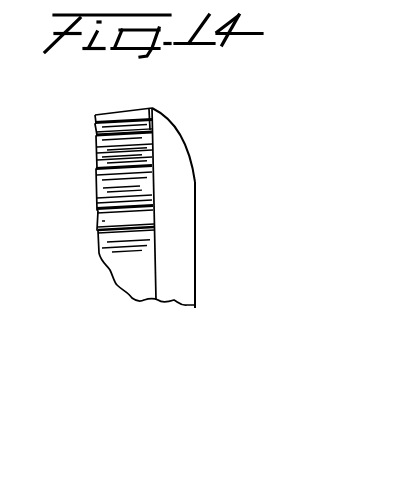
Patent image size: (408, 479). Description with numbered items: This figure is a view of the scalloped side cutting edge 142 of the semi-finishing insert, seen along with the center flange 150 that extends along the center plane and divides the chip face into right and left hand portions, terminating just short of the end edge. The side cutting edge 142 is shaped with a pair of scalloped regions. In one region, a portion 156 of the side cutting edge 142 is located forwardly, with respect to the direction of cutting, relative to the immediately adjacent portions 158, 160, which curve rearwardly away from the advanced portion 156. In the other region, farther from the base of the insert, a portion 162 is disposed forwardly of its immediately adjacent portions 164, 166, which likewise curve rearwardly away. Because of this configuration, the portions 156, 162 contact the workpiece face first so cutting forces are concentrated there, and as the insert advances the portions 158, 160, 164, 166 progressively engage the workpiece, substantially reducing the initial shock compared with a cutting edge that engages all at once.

The side cutting edge 142 is at (152, 196).
The center flange 150 is at (177, 278).
The forwardly advanced portion of the side cutting edge 156 is at (155, 228).
The adjacent portion of the side cutting edge 158 is at (155, 213).
The adjacent portion of the side cutting edge 160 is at (155, 250).
The forwardly advanced portion of the cutting edge 162 is at (150, 136).
The adjacent portion of the cutting edge 164 is at (150, 158).
The adjacent portion of the cutting edge 166 is at (150, 118).